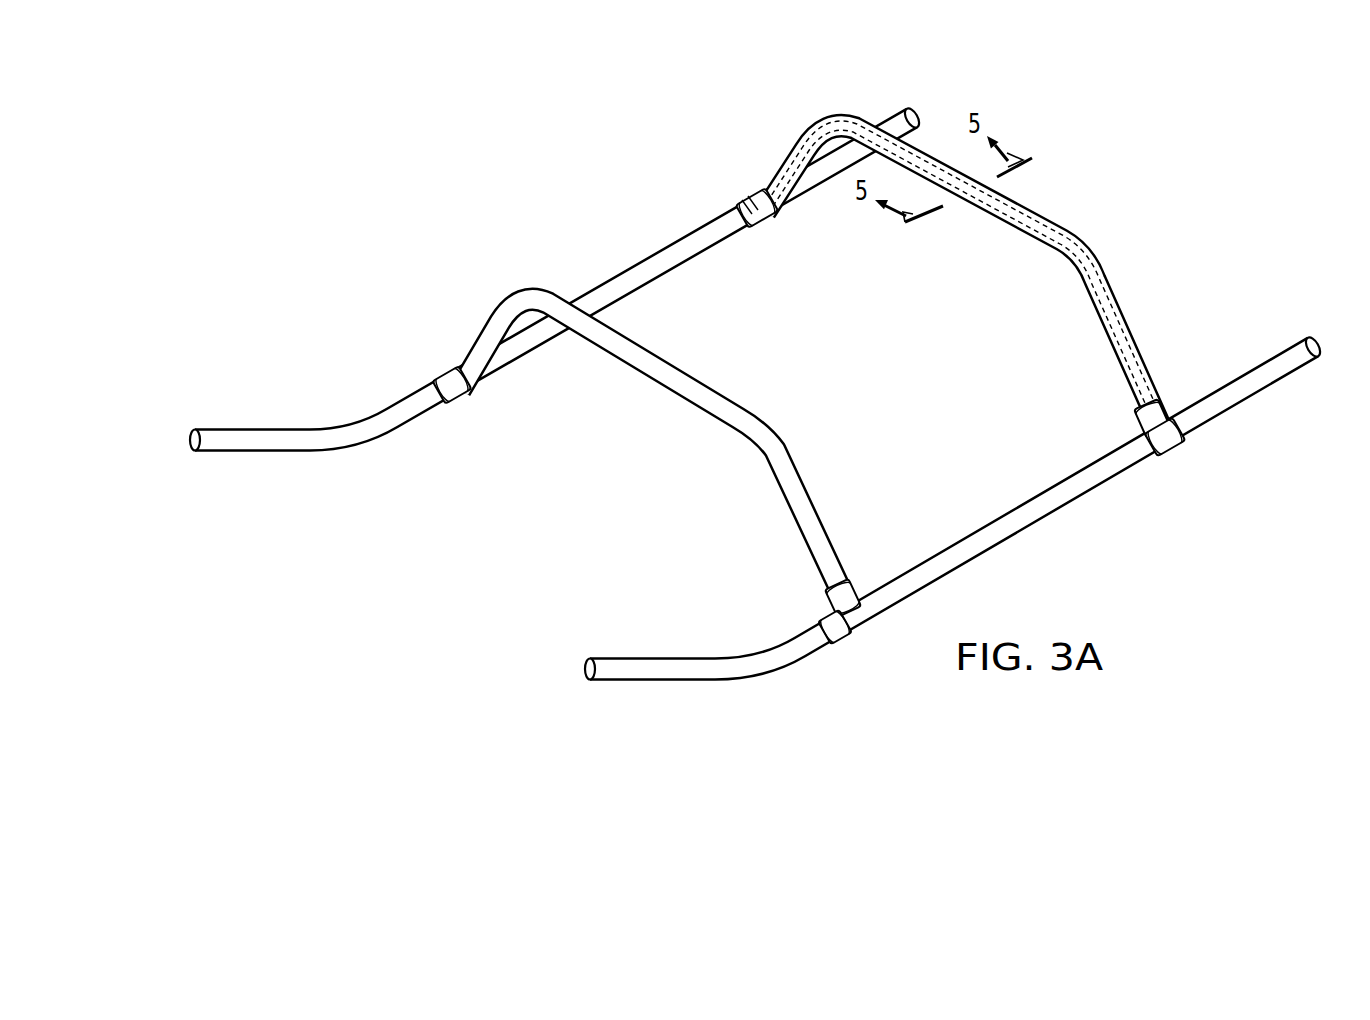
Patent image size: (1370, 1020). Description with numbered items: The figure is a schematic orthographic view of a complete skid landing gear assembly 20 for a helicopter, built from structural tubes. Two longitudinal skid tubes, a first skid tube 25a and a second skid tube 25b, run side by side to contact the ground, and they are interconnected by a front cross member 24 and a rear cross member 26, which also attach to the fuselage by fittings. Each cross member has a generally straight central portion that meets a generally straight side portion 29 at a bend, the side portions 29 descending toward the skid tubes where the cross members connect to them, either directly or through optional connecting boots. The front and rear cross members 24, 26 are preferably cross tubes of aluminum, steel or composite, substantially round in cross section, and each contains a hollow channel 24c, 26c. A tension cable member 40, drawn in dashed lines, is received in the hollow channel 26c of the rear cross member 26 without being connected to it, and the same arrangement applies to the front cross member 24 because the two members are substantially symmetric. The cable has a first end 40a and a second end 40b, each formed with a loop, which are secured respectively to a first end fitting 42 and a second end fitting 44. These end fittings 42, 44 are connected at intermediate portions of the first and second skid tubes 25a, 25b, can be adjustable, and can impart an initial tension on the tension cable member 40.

The skid landing gear assembly 20 is at (505, 120).
The front cross member 24 is at (654, 448).
The hollow channel of front cross member 24c is at (733, 400).
The first longitudinal skid tube 25a is at (1002, 515).
The second longitudinal skid tube 25b is at (635, 262).
The rear cross member 26 is at (965, 254).
The hollow channel of rear cross member 26c is at (1043, 217).
The side portion 29 is at (800, 140).
The tension cable member 40 is at (1080, 250).
The first end of tension cable member 40a is at (1170, 420).
The second end of tension cable member 40b is at (760, 187).
The first end fitting 42 is at (1188, 445).
The second end fitting 44 is at (740, 203).